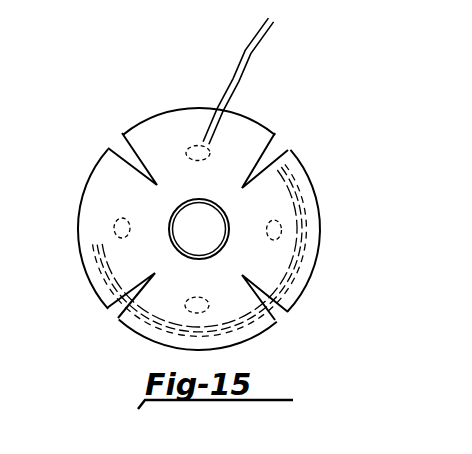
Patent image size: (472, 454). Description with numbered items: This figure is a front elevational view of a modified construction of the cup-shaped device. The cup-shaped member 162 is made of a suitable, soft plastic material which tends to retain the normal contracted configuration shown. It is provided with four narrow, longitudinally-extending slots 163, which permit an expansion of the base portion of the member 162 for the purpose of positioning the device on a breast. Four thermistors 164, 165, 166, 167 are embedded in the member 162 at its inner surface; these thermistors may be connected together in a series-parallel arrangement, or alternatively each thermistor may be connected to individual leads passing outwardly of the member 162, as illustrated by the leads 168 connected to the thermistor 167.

The cup-shaped member 162 is at (363, 181).
The slots 163 is at (117, 142).
The thermistor 164 is at (113, 231).
The thermistor 165 is at (205, 313).
The thermistor 166 is at (282, 233).
The thermistor 167 is at (193, 144).
The leads 168 is at (258, 53).